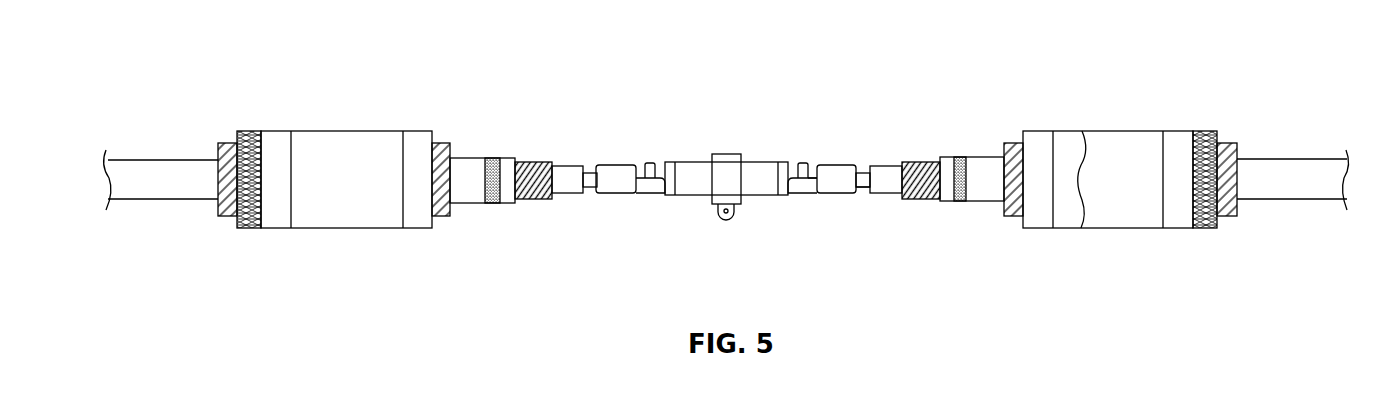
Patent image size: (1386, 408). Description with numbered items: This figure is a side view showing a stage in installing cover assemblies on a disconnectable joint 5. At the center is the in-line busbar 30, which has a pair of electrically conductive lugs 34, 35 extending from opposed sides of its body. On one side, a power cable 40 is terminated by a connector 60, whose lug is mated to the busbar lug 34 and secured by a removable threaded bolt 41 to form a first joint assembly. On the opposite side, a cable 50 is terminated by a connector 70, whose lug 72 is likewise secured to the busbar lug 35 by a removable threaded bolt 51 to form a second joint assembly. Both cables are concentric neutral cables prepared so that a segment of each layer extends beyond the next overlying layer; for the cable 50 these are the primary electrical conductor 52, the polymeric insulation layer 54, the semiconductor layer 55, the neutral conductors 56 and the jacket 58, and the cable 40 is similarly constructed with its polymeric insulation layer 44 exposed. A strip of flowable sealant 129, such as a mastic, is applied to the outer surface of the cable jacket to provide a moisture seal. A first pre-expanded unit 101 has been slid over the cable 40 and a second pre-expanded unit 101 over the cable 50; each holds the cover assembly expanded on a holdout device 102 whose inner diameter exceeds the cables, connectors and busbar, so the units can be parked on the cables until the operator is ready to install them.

The disconnectable joint 5 is at (668, 207).
The busbar 30 is at (722, 142).
The busbar lug 34 is at (648, 197).
The busbar lug 35 is at (803, 196).
The power cable 40 is at (144, 208).
The removable threaded bolt 41 is at (652, 163).
The polymeric insulation layer 44 is at (567, 195).
The cable 50 is at (1303, 208).
The removable threaded bolt 51 is at (803, 163).
The primary electrical conductor 52 is at (866, 195).
The polymeric insulation layer 54 is at (886, 195).
The semiconductor layer 55 is at (910, 162).
The neutral conductors 56 is at (930, 199).
The jacket 58 is at (983, 201).
The termination connector 60 is at (610, 164).
The termination connector 70 is at (850, 165).
The lug 72 is at (812, 176).
The pre-expanded unit 101 is at (321, 108).
The holdout device 102 is at (445, 210).
The strip of flowable sealant 129 is at (492, 158).